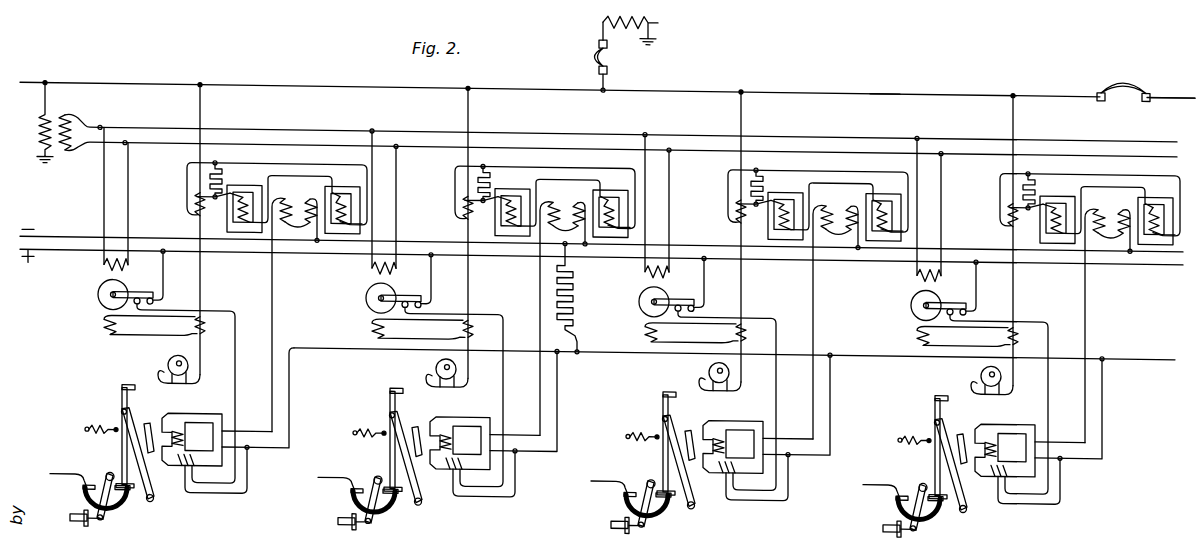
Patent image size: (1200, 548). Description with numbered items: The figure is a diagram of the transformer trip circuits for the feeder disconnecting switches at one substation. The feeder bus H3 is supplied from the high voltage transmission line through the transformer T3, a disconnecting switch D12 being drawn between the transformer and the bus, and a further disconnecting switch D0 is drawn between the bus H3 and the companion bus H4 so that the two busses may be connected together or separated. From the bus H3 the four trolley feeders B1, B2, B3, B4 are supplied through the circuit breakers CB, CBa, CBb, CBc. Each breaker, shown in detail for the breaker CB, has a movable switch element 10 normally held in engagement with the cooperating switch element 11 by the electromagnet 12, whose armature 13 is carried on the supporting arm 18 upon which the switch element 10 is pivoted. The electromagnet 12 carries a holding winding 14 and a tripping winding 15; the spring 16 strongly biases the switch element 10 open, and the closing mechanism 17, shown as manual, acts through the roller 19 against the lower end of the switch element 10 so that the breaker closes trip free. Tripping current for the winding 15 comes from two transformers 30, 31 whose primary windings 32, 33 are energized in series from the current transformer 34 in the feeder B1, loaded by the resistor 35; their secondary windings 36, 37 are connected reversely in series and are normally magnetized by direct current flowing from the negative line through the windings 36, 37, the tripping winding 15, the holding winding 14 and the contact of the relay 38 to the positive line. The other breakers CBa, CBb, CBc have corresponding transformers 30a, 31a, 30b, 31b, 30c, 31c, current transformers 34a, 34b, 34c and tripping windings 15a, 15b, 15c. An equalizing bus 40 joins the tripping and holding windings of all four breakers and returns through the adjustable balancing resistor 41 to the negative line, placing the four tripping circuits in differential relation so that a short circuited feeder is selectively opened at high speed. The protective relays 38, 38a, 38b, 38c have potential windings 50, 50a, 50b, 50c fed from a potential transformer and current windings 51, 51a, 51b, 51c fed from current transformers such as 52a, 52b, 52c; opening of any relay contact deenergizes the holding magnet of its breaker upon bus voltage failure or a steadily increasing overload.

The movable circuit controlling switch element 10 is at (130, 420).
The cooperating switch element 11 is at (179, 381).
The electromagnet 12 is at (192, 445).
The armature 13 is at (152, 429).
The holding winding 14 is at (182, 473).
The tripping winding 15 is at (189, 441).
The tripping winding 15a is at (460, 446).
The tripping winding 15b is at (733, 450).
The tripping winding 15c is at (1005, 453).
The spring 16 is at (101, 421).
The closing mechanism 17 is at (102, 523).
The supporting arm 18 is at (147, 455).
The roller 19 is at (103, 486).
The transformer 30 is at (232, 204).
The transformer 30a is at (512, 203).
The transformer 30b is at (785, 206).
The transformer 30c is at (1057, 210).
The transformer 31 is at (360, 200).
The transformer 31a is at (613, 203).
The transformer 31b is at (886, 207).
The transformer 31c is at (1157, 210).
The primary winding 32 is at (226, 217).
The primary winding 33 is at (366, 203).
The current transformer 34 is at (186, 209).
The current transformer 34a is at (446, 212).
The current transformer 34b is at (719, 215).
The current transformer 34c is at (991, 219).
The resistor 35 is at (231, 171).
The secondary winding 36 is at (284, 306).
The secondary winding 37 is at (303, 211).
The protective relay 38 is at (131, 279).
The protective relay 38a is at (399, 283).
The protective relay 38b is at (672, 287).
The protective relay 38c is at (944, 290).
The equalizing bus 40 is at (602, 343).
The balancing resistor 41 is at (573, 296).
The potential winding 50 is at (98, 268).
The potential winding 50a is at (368, 273).
The potential winding 50b is at (641, 276).
The potential winding 50c is at (913, 280).
The current winding 51 is at (133, 325).
The current winding 51a is at (404, 328).
The current winding 51b is at (691, 338).
The current winding 51c is at (949, 335).
The current transformer 52a is at (485, 333).
The current transformer 52b is at (758, 337).
The current transformer 52c is at (1029, 341).
The circuit breaker CB is at (121, 443).
The circuit breaker CBa is at (380, 454).
The circuit breaker CBb is at (653, 457).
The circuit breaker CBc is at (925, 461).
The trolley feeder B1 is at (62, 476).
The trolley feeder B2 is at (328, 479).
The trolley feeder B3 is at (601, 483).
The trolley feeder B4 is at (875, 486).
The transformer T3 is at (640, 30).
The disconnecting switch D12 is at (597, 52).
The fuse D0 is at (1125, 68).
The feeder bus H3 is at (893, 82).
The bus H4 is at (1165, 76).